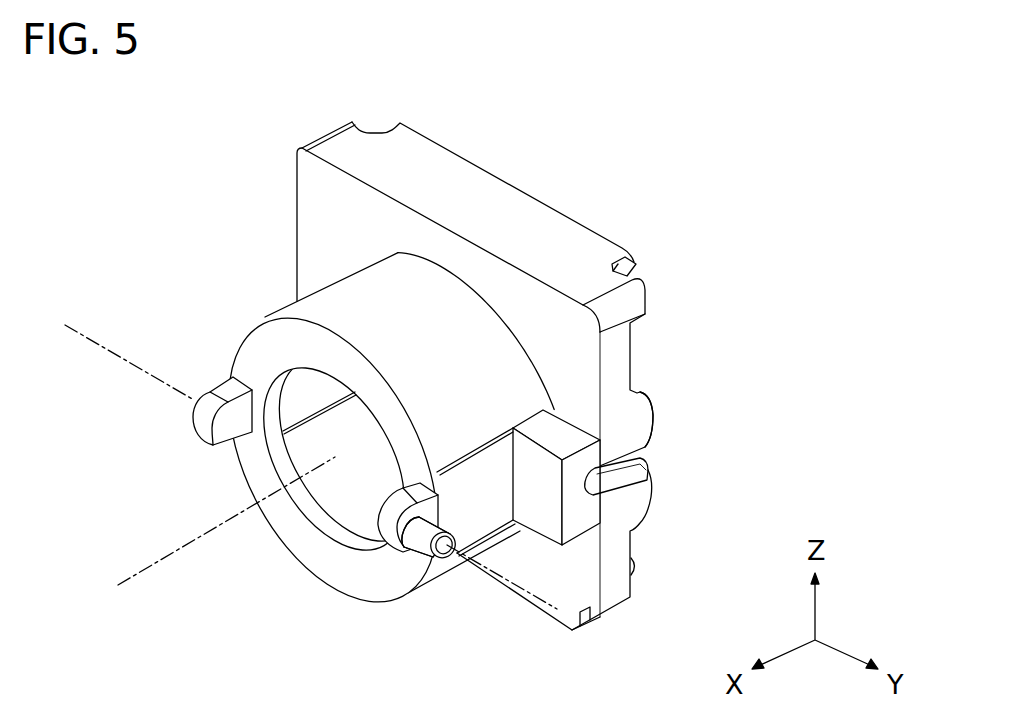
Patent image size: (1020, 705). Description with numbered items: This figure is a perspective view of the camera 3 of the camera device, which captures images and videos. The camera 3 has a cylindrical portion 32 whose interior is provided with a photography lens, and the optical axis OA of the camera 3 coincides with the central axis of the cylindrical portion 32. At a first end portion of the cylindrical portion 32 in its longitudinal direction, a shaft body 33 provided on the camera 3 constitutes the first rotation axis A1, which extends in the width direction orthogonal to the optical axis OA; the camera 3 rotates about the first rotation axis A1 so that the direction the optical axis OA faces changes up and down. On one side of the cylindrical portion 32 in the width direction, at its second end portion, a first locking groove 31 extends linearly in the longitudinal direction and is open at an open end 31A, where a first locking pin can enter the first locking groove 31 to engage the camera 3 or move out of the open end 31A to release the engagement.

The camera 3 is at (576, 140).
The first locking groove 31 is at (615, 496).
The open end 31A is at (658, 452).
The cylindrical portion 32 is at (347, 302).
The shaft body 33 is at (197, 380).
The first rotation axis A1 is at (96, 338).
The optical axis OA is at (157, 530).